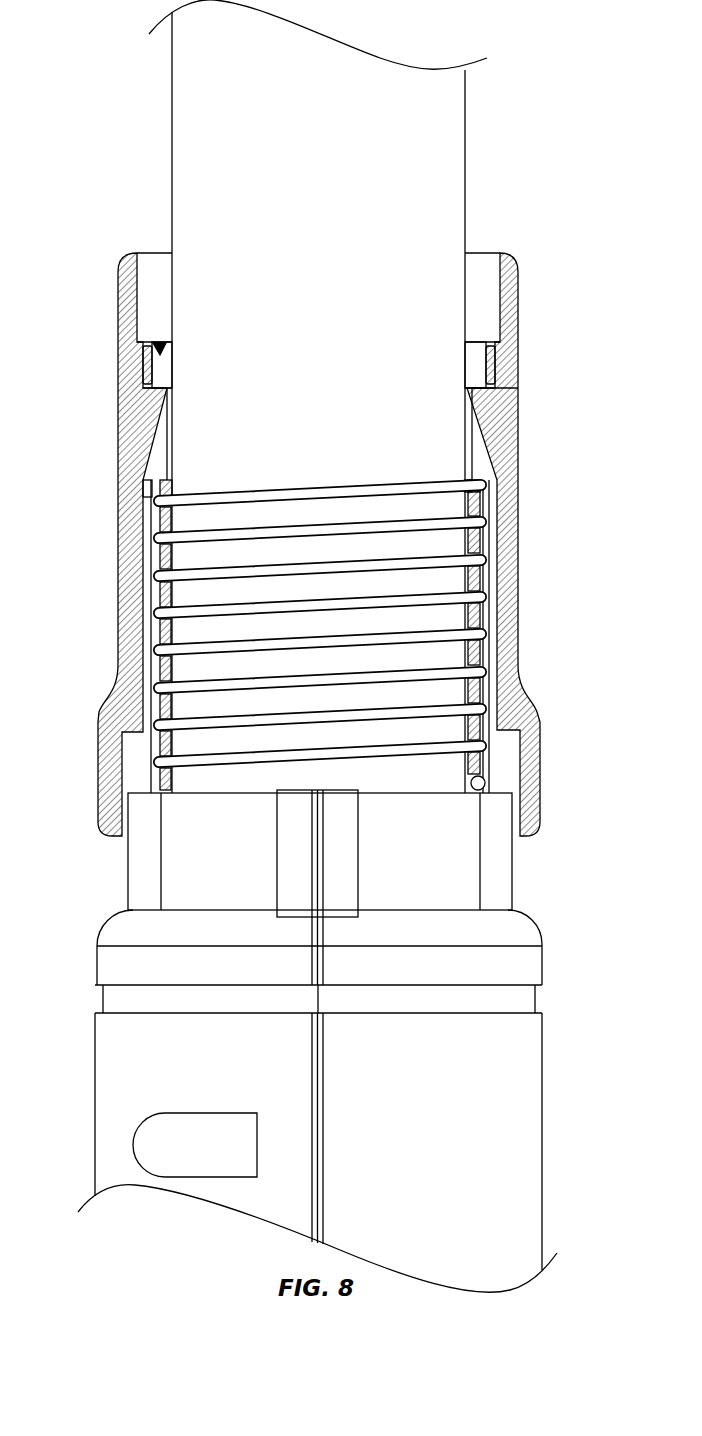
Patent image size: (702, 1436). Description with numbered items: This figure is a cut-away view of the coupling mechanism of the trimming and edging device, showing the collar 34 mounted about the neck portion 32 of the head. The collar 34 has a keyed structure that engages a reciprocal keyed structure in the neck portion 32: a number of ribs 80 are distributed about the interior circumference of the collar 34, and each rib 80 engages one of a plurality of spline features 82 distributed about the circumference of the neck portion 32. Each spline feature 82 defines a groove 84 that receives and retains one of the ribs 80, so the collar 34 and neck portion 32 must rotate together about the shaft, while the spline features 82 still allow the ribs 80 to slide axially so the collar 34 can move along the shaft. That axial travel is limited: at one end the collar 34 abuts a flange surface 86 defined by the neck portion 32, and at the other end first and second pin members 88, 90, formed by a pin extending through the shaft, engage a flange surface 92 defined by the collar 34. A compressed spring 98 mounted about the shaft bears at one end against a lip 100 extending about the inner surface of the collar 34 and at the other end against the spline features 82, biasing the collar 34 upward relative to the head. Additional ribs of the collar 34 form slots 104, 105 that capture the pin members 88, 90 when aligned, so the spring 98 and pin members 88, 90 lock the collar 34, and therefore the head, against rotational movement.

The neck portion 32 is at (440, 1085).
The collar 34 is at (512, 276).
The rib 80 is at (519, 840).
The spline feature 82 is at (129, 867).
The groove 84 is at (313, 792).
The flange surface 86 is at (113, 927).
The first pin member 88 is at (495, 344).
The second pin member 90 is at (151, 343).
The flange surface 92 is at (165, 378).
The compressed spring 98 is at (162, 614).
The lip 100 is at (477, 474).
The slot 104 is at (497, 374).
The slot 105 is at (133, 373).